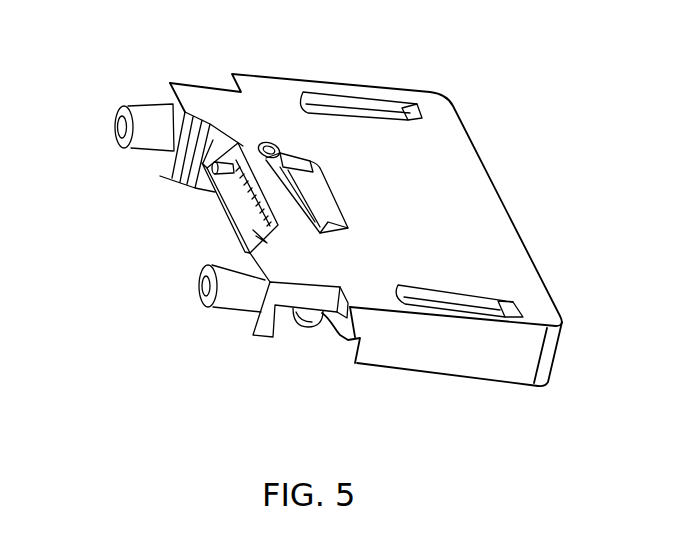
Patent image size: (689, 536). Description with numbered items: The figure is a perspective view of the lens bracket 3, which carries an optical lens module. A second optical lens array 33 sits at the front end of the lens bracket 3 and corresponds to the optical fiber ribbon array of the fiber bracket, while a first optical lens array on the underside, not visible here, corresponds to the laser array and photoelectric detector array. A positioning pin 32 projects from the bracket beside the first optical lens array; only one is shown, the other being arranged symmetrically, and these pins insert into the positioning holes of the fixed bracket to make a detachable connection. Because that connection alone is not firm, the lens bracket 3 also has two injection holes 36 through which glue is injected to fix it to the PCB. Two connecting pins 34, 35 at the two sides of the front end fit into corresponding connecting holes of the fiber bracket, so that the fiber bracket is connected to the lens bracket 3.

The lens bracket 3 is at (207, 43).
The positioning pin 32 is at (313, 320).
The second optical lens array 33 is at (250, 193).
The connecting pin 34 is at (155, 128).
The connecting pin 35 is at (220, 297).
The injection hole 36 is at (373, 110).